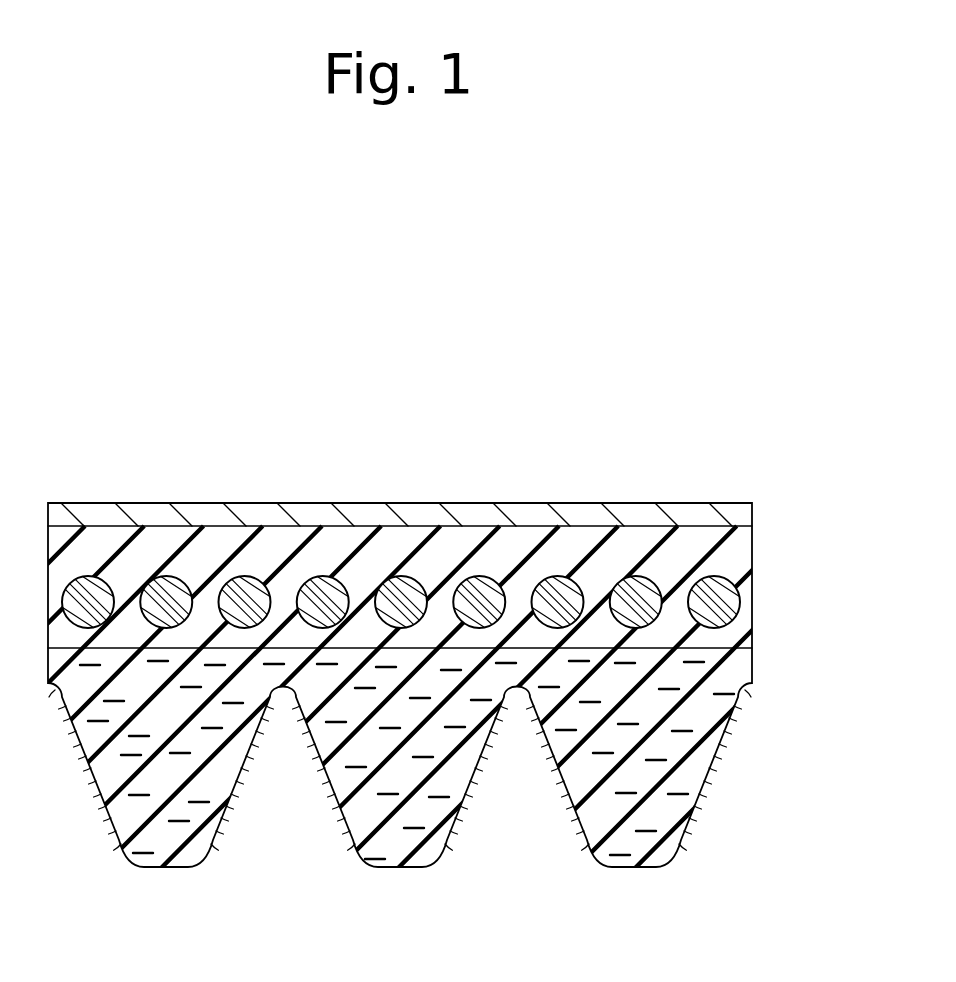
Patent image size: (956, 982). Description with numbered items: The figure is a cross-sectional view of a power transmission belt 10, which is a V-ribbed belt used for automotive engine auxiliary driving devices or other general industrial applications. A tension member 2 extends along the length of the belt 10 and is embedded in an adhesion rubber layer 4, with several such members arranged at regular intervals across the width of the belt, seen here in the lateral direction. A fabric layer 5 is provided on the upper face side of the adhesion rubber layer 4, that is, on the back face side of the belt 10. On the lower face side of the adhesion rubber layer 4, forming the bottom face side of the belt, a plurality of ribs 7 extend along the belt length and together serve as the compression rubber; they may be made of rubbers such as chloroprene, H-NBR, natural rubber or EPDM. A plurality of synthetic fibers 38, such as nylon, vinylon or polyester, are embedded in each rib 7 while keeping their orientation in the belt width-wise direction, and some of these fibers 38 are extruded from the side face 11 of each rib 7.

The power transmission belt 10 is at (422, 366).
The fabric layer 5 is at (752, 513).
The adhesion rubber layer 4 is at (752, 542).
The tension member 2 is at (740, 599).
The rib 7 is at (163, 868).
The synthetic fiber 38 is at (693, 720).
The side face 11 is at (690, 840).